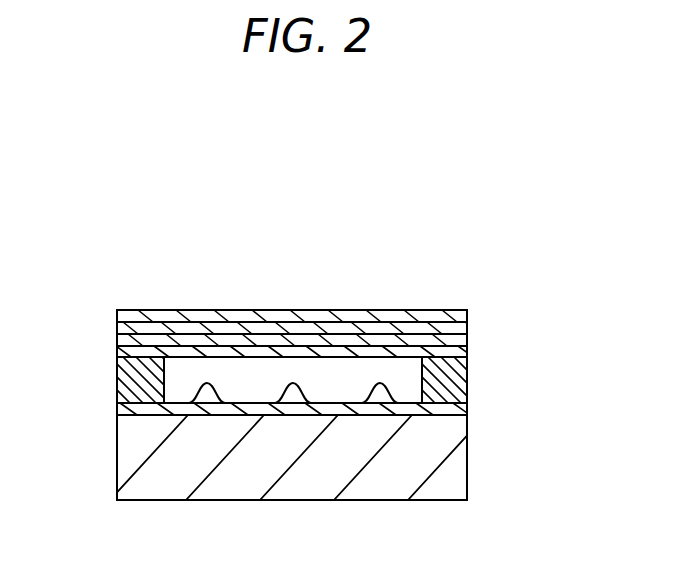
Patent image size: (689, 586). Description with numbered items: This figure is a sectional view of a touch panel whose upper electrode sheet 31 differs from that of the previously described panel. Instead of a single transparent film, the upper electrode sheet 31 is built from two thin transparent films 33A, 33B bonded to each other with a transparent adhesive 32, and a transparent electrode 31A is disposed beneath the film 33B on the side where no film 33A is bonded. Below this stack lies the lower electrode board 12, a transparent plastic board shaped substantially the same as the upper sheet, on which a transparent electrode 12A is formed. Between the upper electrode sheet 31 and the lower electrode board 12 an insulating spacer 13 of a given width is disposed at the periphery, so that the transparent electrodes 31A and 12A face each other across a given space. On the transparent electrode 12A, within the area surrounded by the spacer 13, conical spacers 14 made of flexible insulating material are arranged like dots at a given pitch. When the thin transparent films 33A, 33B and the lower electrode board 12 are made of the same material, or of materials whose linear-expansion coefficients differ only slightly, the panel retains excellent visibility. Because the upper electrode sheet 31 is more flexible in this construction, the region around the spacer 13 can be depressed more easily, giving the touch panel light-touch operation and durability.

The lower electrode board 12 is at (423, 461).
The transparent electrode 12A is at (467, 440).
The insulating spacer 13 is at (142, 390).
The conical spacers 14 is at (302, 388).
The upper electrode sheet 31 is at (375, 324).
The transparent electrode 31A is at (344, 383).
The transparent adhesive 32 is at (440, 324).
The thin transparent film 33A is at (425, 315).
The thin transparent film 33B is at (440, 338).